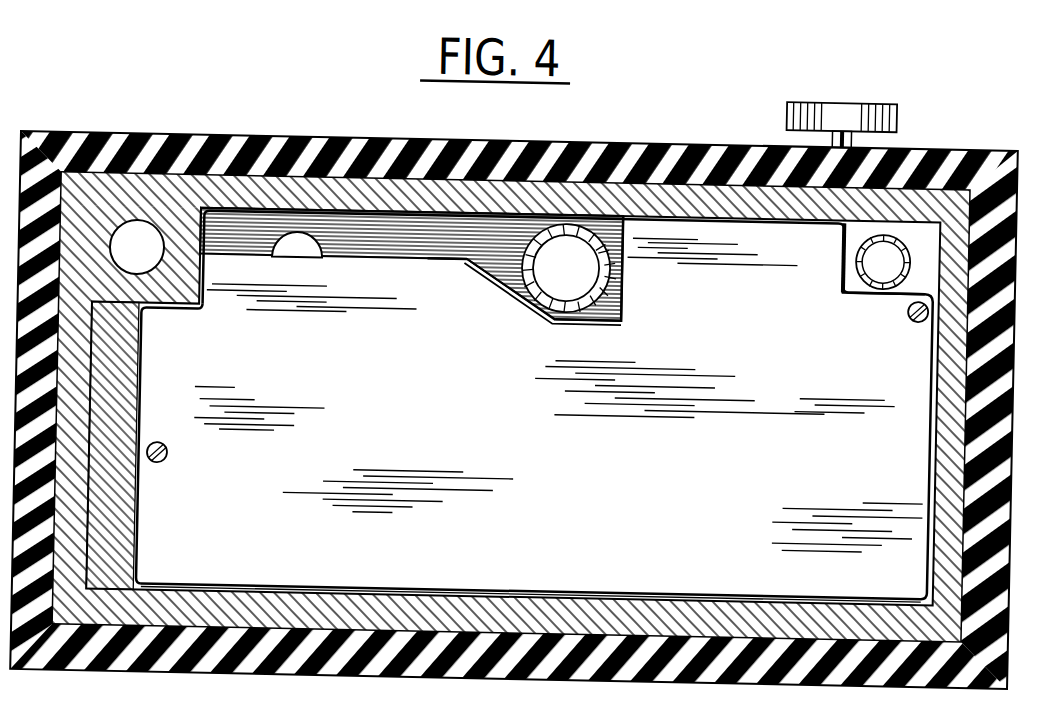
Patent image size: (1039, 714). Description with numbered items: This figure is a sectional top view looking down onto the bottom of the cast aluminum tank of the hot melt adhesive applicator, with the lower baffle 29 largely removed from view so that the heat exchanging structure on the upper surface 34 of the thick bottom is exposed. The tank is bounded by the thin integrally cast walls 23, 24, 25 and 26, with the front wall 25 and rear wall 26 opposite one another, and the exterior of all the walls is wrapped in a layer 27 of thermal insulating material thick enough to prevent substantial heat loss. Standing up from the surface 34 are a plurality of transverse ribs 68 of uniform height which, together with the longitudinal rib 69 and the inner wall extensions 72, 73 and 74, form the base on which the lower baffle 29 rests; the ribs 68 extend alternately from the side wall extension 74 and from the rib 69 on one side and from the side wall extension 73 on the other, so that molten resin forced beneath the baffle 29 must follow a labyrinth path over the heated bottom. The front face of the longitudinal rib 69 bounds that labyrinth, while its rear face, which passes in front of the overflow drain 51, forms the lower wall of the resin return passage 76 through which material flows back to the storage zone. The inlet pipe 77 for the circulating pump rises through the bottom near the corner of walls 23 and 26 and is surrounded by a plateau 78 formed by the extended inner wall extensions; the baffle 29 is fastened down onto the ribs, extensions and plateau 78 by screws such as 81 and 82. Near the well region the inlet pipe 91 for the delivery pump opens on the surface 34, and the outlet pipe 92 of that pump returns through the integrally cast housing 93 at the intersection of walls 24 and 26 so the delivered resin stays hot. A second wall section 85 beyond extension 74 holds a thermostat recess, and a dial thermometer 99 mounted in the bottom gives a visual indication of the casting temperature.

The wall 23 is at (951, 437).
The wall 24 is at (80, 378).
The front wall 25 is at (524, 595).
The rear wall 26 is at (299, 176).
The layer of thermal insulating material 27 is at (376, 141).
The lower baffle 29 is at (604, 442).
The upper surface of bottom 34 is at (508, 248).
The overflow drain 51 is at (578, 252).
The transverse ribs 68 is at (626, 283).
The longitudinal rib 69 is at (443, 254).
The inner wall extension 72 is at (146, 552).
The inner wall extension 73 is at (656, 587).
The inner wall extension 74 is at (741, 210).
The resin return passage 76 is at (370, 226).
The inlet pipe for circulating pump 77 is at (874, 254).
The plateau 78 is at (914, 231).
The screw 81 is at (912, 298).
The screw 82 is at (175, 452).
The second wall section 85 is at (124, 341).
The inlet pipe for delivery pump 91 is at (291, 248).
The outlet pipe of delivery pump 92 is at (148, 250).
The integrally cast housing 93 is at (160, 178).
The dial thermometer 99 is at (847, 87).